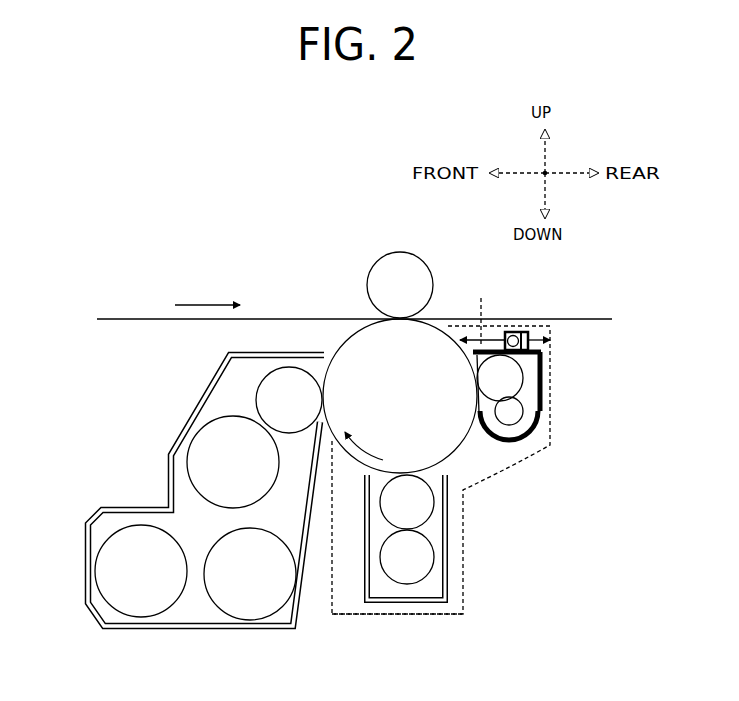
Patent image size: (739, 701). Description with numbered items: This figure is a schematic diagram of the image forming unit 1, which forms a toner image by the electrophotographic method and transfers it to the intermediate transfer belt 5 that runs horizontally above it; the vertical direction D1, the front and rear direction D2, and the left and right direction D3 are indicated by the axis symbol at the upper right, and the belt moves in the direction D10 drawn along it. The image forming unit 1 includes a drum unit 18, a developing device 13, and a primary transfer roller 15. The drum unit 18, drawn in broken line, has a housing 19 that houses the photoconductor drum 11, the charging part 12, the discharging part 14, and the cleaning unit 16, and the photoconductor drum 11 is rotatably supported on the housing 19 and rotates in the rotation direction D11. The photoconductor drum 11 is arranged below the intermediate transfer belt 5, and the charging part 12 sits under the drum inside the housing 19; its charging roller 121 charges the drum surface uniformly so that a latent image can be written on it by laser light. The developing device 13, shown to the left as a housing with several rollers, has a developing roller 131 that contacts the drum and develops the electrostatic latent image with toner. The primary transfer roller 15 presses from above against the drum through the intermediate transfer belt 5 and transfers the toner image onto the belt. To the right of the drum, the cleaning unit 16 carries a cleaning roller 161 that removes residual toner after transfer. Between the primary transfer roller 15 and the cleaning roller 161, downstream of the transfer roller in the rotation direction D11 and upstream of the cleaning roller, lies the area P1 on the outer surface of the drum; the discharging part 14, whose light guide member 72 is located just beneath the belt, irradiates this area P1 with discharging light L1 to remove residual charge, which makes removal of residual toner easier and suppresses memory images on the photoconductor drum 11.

The image forming unit 1 is at (325, 640).
The intermediate transfer belt 5 is at (150, 318).
The photoconductor drum 11 is at (346, 340).
The charging part 12 is at (448, 540).
The charging roller 121 is at (437, 500).
The developing device 13 is at (199, 391).
The developing roller 131 is at (257, 400).
The discharging part 14 is at (551, 341).
The primary transfer roller 15 is at (369, 280).
The cleaning unit 16 is at (538, 427).
The cleaning roller 161 is at (543, 401).
The drum unit 18 is at (476, 577).
The housing 19 is at (452, 617).
The light guide member 72 is at (512, 331).
The vertical direction D1 is at (548, 158).
The front and rear direction D2 is at (527, 178).
The left and right direction D3 is at (543, 170).
The conveyance direction D10 is at (188, 304).
The rotation direction D11 is at (362, 448).
The discharging light L1 is at (505, 315).
The area P1 is at (452, 358).